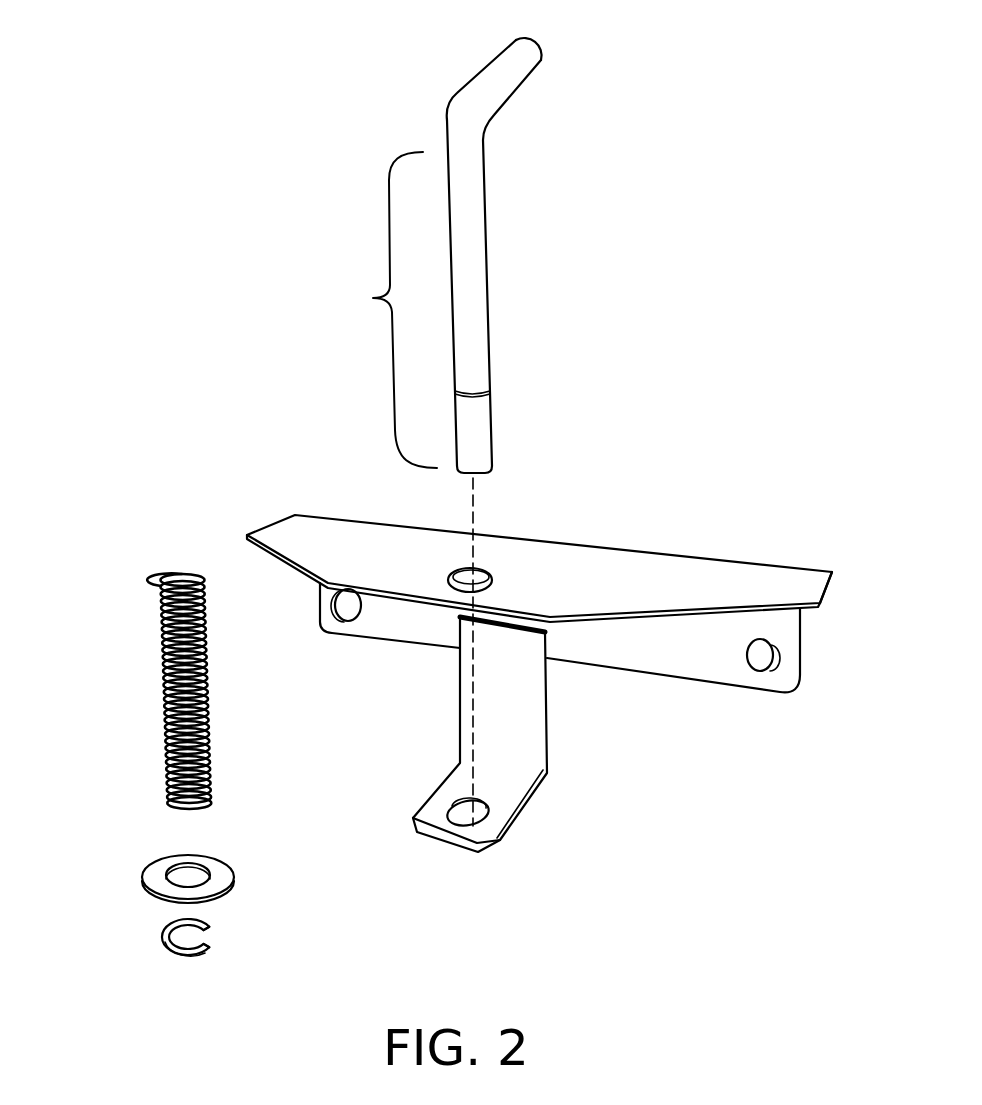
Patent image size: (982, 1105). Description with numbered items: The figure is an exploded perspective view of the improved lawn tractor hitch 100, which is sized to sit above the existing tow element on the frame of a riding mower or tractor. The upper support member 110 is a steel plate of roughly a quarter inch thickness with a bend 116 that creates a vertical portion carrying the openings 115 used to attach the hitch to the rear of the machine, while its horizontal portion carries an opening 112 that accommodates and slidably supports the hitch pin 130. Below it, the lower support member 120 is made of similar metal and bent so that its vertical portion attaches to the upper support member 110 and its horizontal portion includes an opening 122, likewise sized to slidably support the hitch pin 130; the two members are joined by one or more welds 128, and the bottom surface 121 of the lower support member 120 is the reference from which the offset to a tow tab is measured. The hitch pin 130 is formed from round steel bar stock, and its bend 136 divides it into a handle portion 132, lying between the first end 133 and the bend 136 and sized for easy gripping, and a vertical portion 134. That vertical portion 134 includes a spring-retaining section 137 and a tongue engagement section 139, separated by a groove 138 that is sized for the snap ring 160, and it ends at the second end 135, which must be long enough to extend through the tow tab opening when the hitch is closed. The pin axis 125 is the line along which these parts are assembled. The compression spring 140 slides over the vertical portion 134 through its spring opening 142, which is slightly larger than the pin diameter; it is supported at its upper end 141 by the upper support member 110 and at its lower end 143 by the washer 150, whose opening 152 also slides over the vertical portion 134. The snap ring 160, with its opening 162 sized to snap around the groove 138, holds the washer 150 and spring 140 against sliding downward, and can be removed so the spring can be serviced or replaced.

The lawn tractor hitch 100 is at (165, 170).
The upper support member 110 is at (720, 570).
The opening 112 is at (460, 567).
The openings 115 is at (330, 618).
The bend 116 is at (795, 565).
The lower support member 120 is at (559, 731).
The bottom surface 121 is at (502, 845).
The opening 122 is at (492, 808).
The axis 125 is at (468, 768).
The weld 128 is at (460, 617).
The hitch pin 130 is at (547, 43).
The handle portion 132 is at (520, 97).
The first end 133 is at (543, 55).
The vertical portion 134 is at (380, 310).
The second end 135 is at (487, 472).
The bend 136 is at (448, 108).
The spring-retaining section 137 is at (487, 238).
The groove 138 is at (490, 392).
The tongue engagement section 139 is at (489, 442).
The compression spring 140 is at (150, 691).
The upper end 141 is at (185, 572).
The spring opening 142 is at (167, 583).
The lower end 143 is at (284, 773).
The washer 150 is at (142, 852).
The opening 152 is at (200, 865).
The snap ring 160 is at (148, 926).
The opening 162 is at (222, 925).